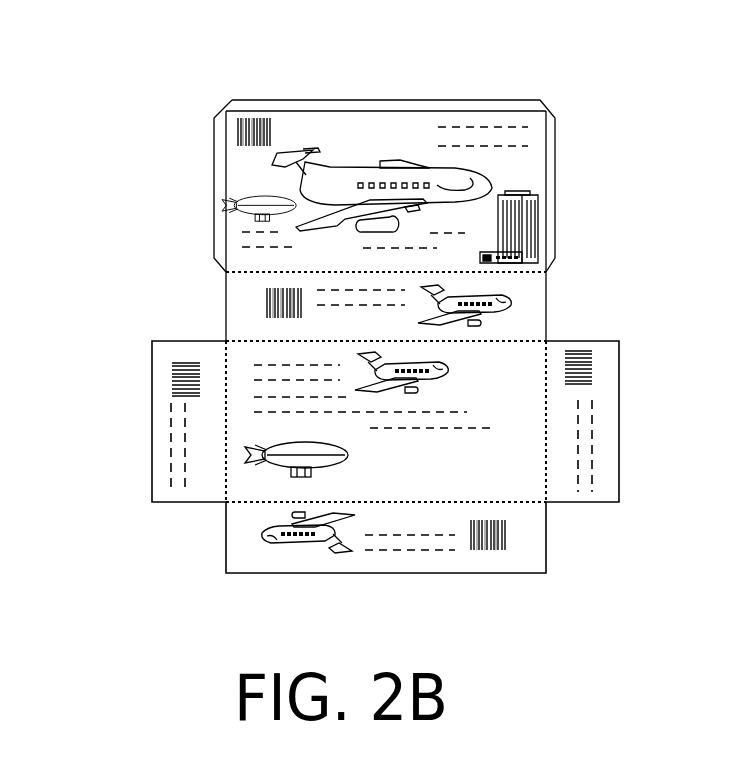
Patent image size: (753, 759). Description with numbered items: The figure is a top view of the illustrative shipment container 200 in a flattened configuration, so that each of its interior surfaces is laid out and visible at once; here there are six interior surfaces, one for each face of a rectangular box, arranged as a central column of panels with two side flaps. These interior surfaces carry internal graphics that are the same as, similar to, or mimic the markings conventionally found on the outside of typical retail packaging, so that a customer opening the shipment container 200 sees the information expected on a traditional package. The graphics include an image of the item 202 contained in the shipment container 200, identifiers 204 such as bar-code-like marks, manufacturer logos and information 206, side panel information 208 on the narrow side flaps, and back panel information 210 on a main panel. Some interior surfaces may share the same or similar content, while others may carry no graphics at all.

The shipment container 200 is at (118, 96).
The image of the item 202 is at (465, 183).
The identifiers 204 is at (270, 122).
The manufacturer logos and information 206 is at (268, 197).
The side panel information 208 is at (594, 455).
The back panel information 210 is at (498, 467).